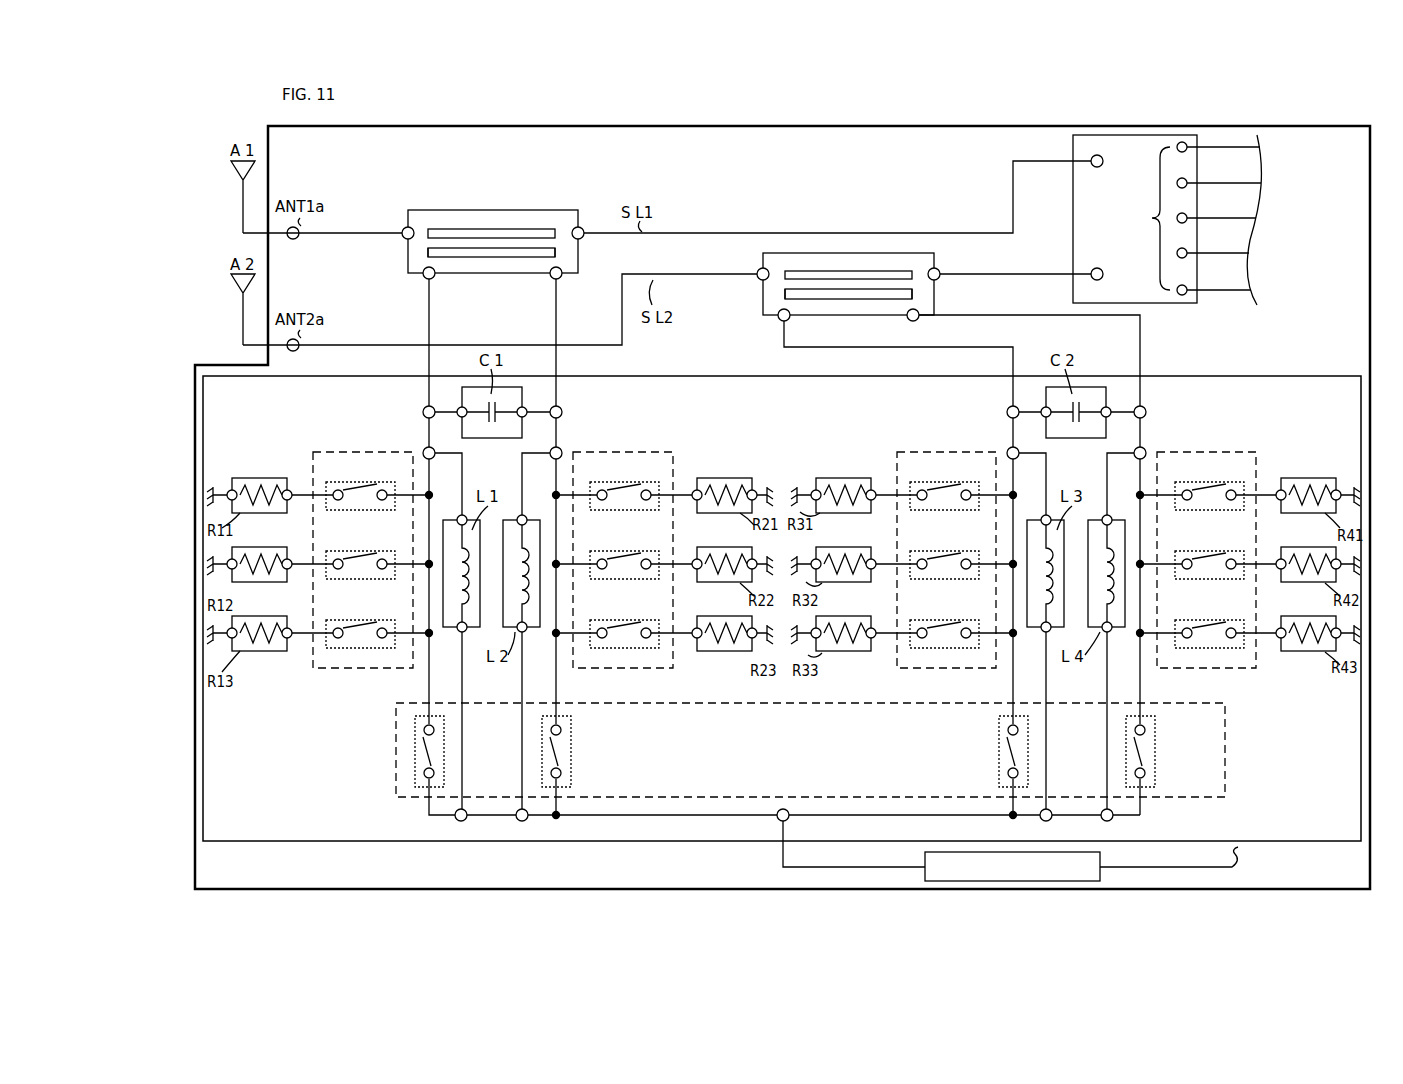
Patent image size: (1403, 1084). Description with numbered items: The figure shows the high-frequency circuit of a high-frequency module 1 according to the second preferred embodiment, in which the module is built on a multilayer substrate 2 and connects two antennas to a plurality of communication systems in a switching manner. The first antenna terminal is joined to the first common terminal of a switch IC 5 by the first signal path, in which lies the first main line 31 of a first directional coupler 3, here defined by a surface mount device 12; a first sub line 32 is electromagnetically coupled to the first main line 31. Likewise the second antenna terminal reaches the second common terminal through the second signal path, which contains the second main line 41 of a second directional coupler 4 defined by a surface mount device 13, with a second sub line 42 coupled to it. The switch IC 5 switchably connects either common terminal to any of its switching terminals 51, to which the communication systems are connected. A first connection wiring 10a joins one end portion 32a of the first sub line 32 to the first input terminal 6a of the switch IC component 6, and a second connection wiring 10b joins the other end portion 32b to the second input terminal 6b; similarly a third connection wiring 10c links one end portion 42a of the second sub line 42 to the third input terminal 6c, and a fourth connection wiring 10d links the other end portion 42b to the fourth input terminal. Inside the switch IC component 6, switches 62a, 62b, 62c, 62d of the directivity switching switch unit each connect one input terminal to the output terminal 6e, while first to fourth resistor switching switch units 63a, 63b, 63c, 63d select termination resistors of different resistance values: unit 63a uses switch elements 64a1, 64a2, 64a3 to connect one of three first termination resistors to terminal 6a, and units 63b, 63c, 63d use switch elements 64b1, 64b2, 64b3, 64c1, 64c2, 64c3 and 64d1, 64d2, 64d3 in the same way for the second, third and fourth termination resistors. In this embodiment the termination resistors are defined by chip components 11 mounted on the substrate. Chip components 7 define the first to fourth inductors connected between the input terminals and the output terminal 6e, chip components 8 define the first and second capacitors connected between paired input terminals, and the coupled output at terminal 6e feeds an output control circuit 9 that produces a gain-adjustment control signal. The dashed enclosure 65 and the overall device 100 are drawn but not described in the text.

The high-frequency module 1 is at (229, 358).
The multilayer substrate 2 is at (262, 889).
The first directional coupler 3 is at (437, 222).
The second directional coupler 4 is at (797, 262).
The switch IC 5 is at (1073, 197).
The switch IC component 6 is at (1292, 376).
The chip components 7 is at (530, 520).
The chip components 8 is at (470, 438).
The output control circuit 9 is at (1081, 864).
The first connection wiring 10a is at (428, 315).
The second connection wiring 10b is at (556, 315).
The third connection wiring 10c is at (784, 341).
The fourth connection wiring 10d is at (993, 323).
The chip components 11 is at (244, 478).
The surface mount device 12 is at (461, 210).
The surface mount device 13 is at (843, 253).
The first main line 31 is at (540, 230).
The first sub line 32 is at (488, 262).
The one end portion of first sub line 32a is at (428, 253).
The other end portion of first sub line 32b is at (556, 253).
The second main line 41 is at (900, 272).
The second sub line 42 is at (845, 300).
The one end portion of second sub line 42a is at (785, 296).
The other end portion of second sub line 42b is at (913, 296).
The switching terminals 51 is at (1189, 220).
The first input terminal 6a is at (429, 410).
The second input terminal 6b is at (556, 410).
The third input terminal 6c is at (1013, 412).
The output terminal 6e is at (783, 809).
The switch 62a is at (414, 752).
The switch 62b is at (570, 752).
The switch 62c is at (998, 752).
The switch 62d is at (1154, 752).
The first resistor switching switch unit 63a is at (395, 450).
The second resistor switching switch unit 63b is at (600, 452).
The third resistor switching switch unit 63c is at (975, 450).
The fourth resistor switching switch unit 63d is at (1172, 452).
The first switch element 64a1 is at (387, 483).
The second switch element 64a2 is at (387, 552).
The third switch element 64a3 is at (387, 621).
The switch element 64b1 is at (605, 483).
The switch element 64b2 is at (605, 552).
The switch element 64b3 is at (605, 621).
The switch element 64c1 is at (970, 483).
The switch element 64c2 is at (970, 552).
The switch element 64c3 is at (970, 621).
The switch element 64d1 is at (1189, 483).
The switch element 64d2 is at (1189, 552).
The switch element 64d3 is at (1189, 621).
The switch group 65 is at (760, 706).
The communication device 100 is at (692, 198).